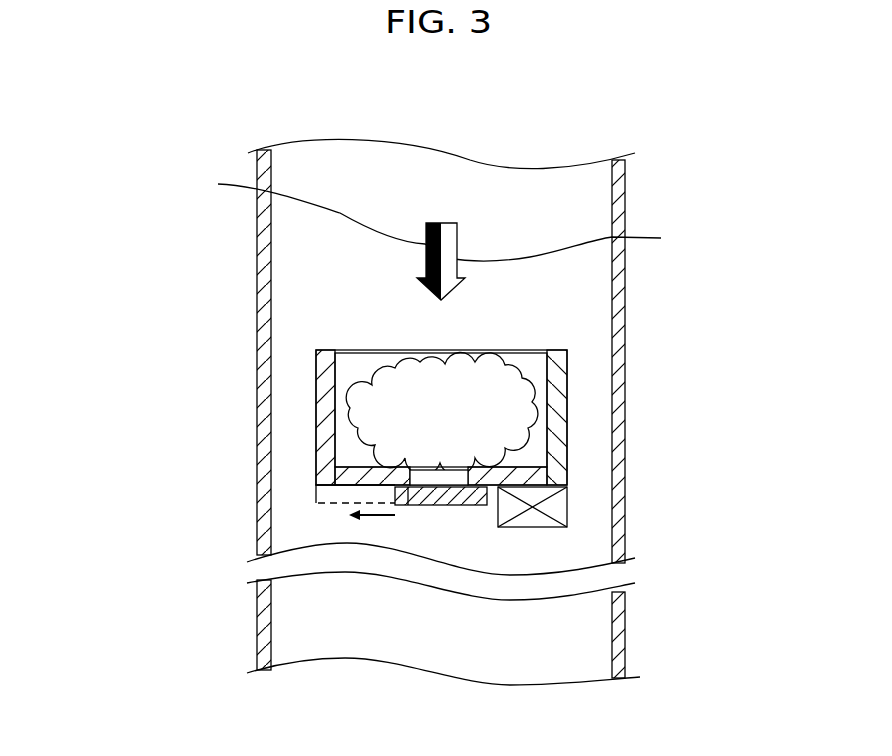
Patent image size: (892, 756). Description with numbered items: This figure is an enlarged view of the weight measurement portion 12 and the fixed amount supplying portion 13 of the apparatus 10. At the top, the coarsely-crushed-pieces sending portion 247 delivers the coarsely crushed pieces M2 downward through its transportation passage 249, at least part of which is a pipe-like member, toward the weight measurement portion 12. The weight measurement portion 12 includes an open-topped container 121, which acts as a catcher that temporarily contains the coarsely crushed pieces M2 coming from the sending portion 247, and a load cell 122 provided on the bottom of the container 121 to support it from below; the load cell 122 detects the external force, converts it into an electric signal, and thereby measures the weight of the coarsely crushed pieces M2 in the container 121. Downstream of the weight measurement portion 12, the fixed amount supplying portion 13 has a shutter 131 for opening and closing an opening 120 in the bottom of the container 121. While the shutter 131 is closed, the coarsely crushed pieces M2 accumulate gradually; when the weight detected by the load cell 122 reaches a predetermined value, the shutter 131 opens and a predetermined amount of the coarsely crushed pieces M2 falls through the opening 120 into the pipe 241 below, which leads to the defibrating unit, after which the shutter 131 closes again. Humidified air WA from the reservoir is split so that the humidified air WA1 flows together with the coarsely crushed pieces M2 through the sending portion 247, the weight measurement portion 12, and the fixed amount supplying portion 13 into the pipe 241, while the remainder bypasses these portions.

The coating apparatus 10 is at (621, 112).
The coarsely-crushed-pieces sending portion 247 is at (257, 289).
The transportation passage 249 is at (625, 318).
The pipe 241 is at (258, 645).
The coarsely crushed pieces M2 is at (470, 323).
The humidified air WA is at (488, 222).
The humidified air WA1 is at (488, 222).
The weight measurement portion 12 is at (363, 412).
The container 121 is at (325, 422).
The load cell 122 is at (556, 505).
The opening 120 is at (432, 482).
The shutter 131 is at (465, 566).
The fixed amount supplying portion 13 is at (462, 498).